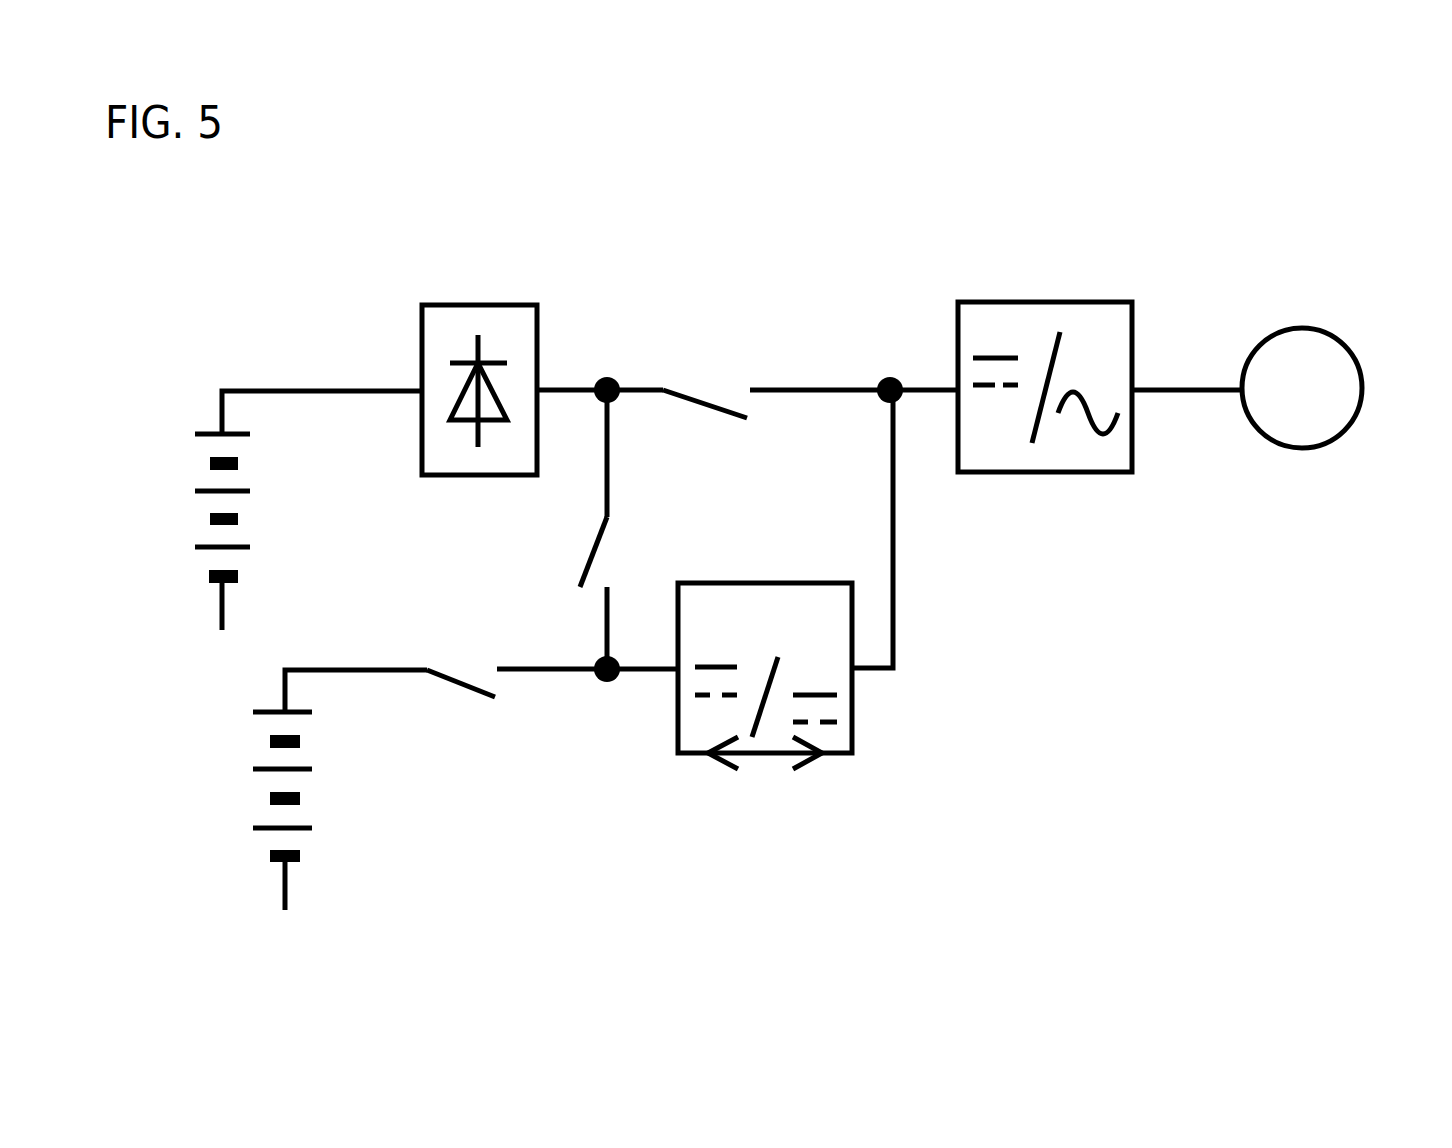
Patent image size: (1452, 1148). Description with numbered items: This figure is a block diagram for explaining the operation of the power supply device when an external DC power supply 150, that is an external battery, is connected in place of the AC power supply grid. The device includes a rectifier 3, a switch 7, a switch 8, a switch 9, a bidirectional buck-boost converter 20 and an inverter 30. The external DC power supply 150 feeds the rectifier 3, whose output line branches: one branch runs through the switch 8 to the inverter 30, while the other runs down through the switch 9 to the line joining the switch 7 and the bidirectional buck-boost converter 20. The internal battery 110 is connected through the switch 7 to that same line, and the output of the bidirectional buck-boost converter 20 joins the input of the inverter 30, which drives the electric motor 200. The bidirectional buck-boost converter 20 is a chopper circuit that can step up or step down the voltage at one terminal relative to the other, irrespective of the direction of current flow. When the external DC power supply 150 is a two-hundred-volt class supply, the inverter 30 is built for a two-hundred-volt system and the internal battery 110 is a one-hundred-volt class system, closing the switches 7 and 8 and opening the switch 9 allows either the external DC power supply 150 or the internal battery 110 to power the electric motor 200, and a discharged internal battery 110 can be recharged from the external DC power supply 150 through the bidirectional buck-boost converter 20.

The rectifier 3 is at (503, 303).
The switch 7 is at (452, 687).
The switch 8 is at (695, 405).
The switch 9 is at (592, 552).
The bidirectional buck-boost converter 20 is at (853, 717).
The inverter 30 is at (1087, 297).
The internal battery 110 is at (255, 808).
The external DC power supply 150 is at (200, 512).
The electric motor 200 is at (1340, 337).